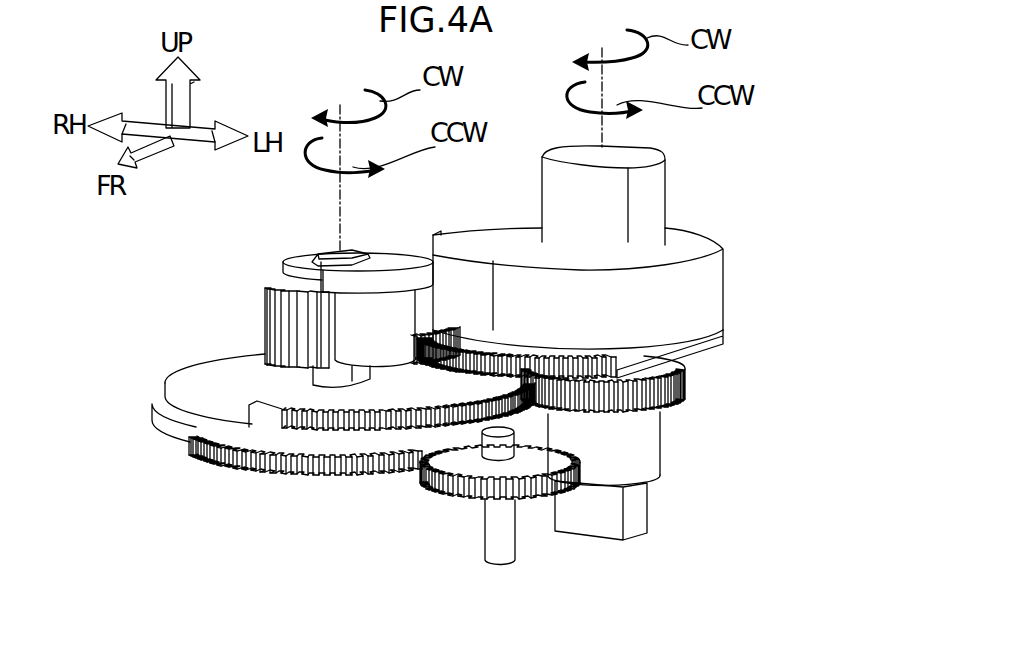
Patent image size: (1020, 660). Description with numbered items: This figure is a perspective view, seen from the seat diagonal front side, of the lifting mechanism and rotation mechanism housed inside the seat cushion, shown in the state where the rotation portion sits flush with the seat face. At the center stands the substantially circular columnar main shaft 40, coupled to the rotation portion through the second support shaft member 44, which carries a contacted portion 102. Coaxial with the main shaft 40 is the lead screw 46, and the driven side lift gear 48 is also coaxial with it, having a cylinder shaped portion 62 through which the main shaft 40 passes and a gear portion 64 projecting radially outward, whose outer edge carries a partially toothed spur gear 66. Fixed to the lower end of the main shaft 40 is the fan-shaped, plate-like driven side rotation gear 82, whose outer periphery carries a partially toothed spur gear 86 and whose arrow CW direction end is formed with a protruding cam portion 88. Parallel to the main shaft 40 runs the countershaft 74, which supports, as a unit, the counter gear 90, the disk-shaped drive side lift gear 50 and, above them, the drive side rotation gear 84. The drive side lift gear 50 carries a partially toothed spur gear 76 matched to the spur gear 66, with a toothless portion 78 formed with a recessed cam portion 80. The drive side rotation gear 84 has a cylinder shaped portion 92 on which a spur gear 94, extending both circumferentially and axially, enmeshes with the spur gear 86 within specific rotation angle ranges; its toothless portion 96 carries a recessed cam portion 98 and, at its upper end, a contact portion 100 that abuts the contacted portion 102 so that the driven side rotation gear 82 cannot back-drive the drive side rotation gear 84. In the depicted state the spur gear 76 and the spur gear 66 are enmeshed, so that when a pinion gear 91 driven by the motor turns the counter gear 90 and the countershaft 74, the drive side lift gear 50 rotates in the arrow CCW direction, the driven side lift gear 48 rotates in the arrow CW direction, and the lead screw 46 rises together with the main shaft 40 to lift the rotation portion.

The main shaft 40 is at (668, 192).
The second support shaft member 44 is at (727, 282).
The lead screw 46 is at (640, 540).
The driven side lift gear 48 is at (668, 437).
The drive side lift gear 50 is at (179, 357).
The cylinder shaped portion 62 is at (660, 455).
The gear portion 64 is at (692, 383).
The spur gear 66 is at (657, 406).
The countershaft 74 is at (325, 250).
The spur gear 76 is at (340, 420).
The toothless portion 78 is at (155, 410).
The cam portion 80 is at (188, 397).
The driven side rotation gear 82 is at (717, 340).
The drive side rotation gear 84 is at (261, 273).
The spur gear 86 is at (537, 367).
The cam portion 88 is at (433, 308).
The counter gear 90 is at (267, 463).
The pinion gear 91 is at (460, 483).
The cylinder shaped portion 92 is at (262, 337).
The spur gear 94 is at (263, 307).
The toothless portion 96 is at (409, 352).
The cam portion 98 is at (373, 340).
The contact portion 100 is at (390, 282).
The contacted portion 102 is at (433, 240).